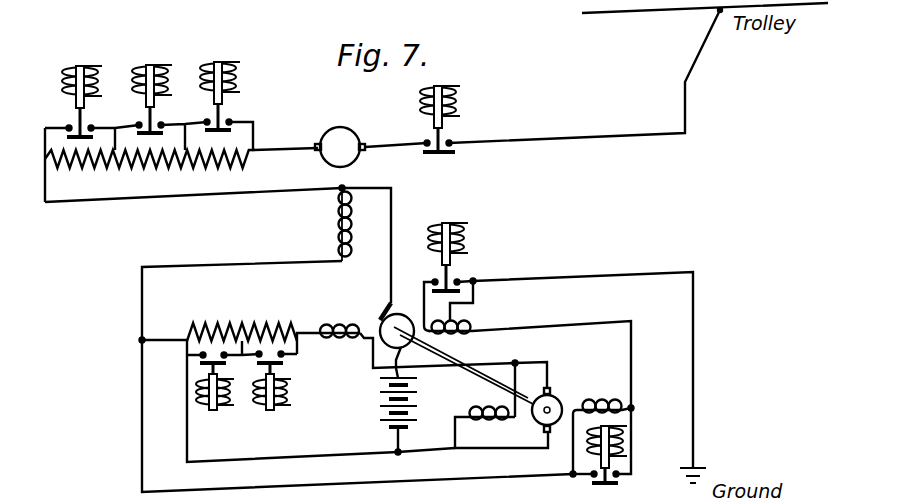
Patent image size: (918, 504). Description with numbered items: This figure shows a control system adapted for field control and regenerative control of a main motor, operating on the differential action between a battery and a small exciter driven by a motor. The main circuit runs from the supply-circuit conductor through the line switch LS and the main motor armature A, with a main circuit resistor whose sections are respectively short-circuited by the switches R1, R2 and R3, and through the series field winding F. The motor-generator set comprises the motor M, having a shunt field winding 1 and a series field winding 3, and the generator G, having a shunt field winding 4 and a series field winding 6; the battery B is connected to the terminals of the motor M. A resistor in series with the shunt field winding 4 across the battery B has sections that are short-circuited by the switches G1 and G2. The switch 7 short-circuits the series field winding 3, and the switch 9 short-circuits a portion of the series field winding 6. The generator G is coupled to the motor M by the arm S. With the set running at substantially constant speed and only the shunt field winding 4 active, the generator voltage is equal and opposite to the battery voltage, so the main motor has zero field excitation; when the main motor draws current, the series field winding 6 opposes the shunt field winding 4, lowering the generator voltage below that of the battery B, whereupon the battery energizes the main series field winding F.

The resistor short-circuiting switch R1 is at (223, 96).
The resistor short-circuiting switch R2 is at (155, 99).
The resistor short-circuiting switch R3 is at (85, 101).
The main motor armature A is at (340, 147).
The line switch LS is at (446, 119).
The series field winding F is at (335, 226).
The generator G is at (401, 322).
The switch arm S is at (461, 366).
The shunt field winding 4 is at (340, 321).
The switch 9 is at (452, 280).
The series field winding 6 is at (470, 326).
The battery B is at (380, 404).
The resistor short-circuiting switch G1 is at (280, 390).
The resistor short-circuiting switch G2 is at (221, 392).
The shunt field winding 1 is at (493, 423).
The motor M is at (537, 424).
The series field winding 3 is at (602, 427).
The switch 7 is at (607, 454).